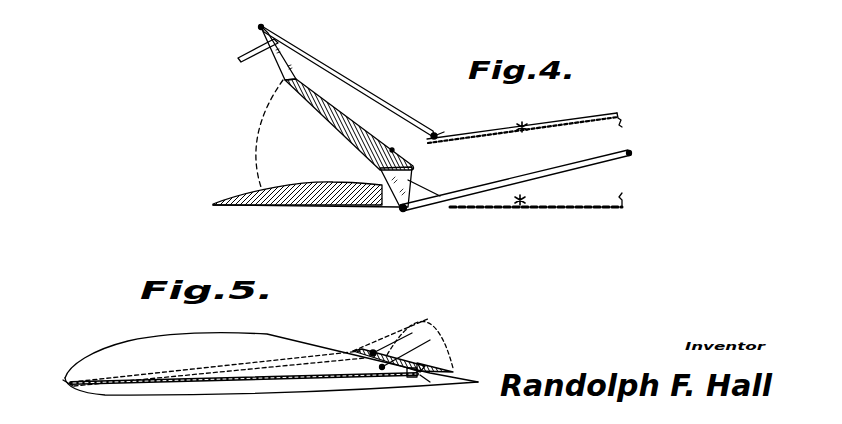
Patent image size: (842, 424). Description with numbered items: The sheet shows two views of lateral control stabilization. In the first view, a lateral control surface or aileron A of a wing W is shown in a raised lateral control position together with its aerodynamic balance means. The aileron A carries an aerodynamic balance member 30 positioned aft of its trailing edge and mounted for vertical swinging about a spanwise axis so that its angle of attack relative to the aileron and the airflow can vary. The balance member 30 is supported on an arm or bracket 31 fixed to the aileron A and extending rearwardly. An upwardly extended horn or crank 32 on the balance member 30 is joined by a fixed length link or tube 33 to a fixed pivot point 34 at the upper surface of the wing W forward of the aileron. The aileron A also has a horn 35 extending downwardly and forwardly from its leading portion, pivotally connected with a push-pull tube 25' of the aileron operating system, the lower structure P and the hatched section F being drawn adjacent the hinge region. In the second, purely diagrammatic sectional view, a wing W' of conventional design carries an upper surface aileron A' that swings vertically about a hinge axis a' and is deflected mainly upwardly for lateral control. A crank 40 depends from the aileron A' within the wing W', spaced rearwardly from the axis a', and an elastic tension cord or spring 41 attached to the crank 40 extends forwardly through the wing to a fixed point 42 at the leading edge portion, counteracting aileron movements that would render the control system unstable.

In FIG. 4, the aerodynamic balance member 30 is at (238, 58).
In FIG. 4, the arm or bracket 31 is at (280, 62).
In FIG. 4, the horn or crank 32 is at (259, 29).
In FIG. 4, the fixed length link or tube 33 is at (342, 77).
In FIG. 4, the fixed pivot point 34 is at (438, 133).
In FIG. 4, the aileron horn 35 is at (407, 180).
In FIG. 4, the push-pull tube 25' is at (516, 181).
In FIG. 4, the flap F is at (302, 207).
In FIG. 4, the aileron A is at (356, 124).
In FIG. 4, the wing W is at (529, 106).
In FIG. 4, the plate P is at (536, 173).
In FIG. 5, the wing W' is at (271, 342).
In FIG. 5, the elastic tension cord or spring 41 is at (310, 378).
In FIG. 5, the aileron hinge axis a' is at (403, 338).
In FIG. 5, the aileron A' is at (445, 342).
In FIG. 5, the crank 40 is at (422, 376).
In FIG. 5, the fixed point 42 is at (66, 381).